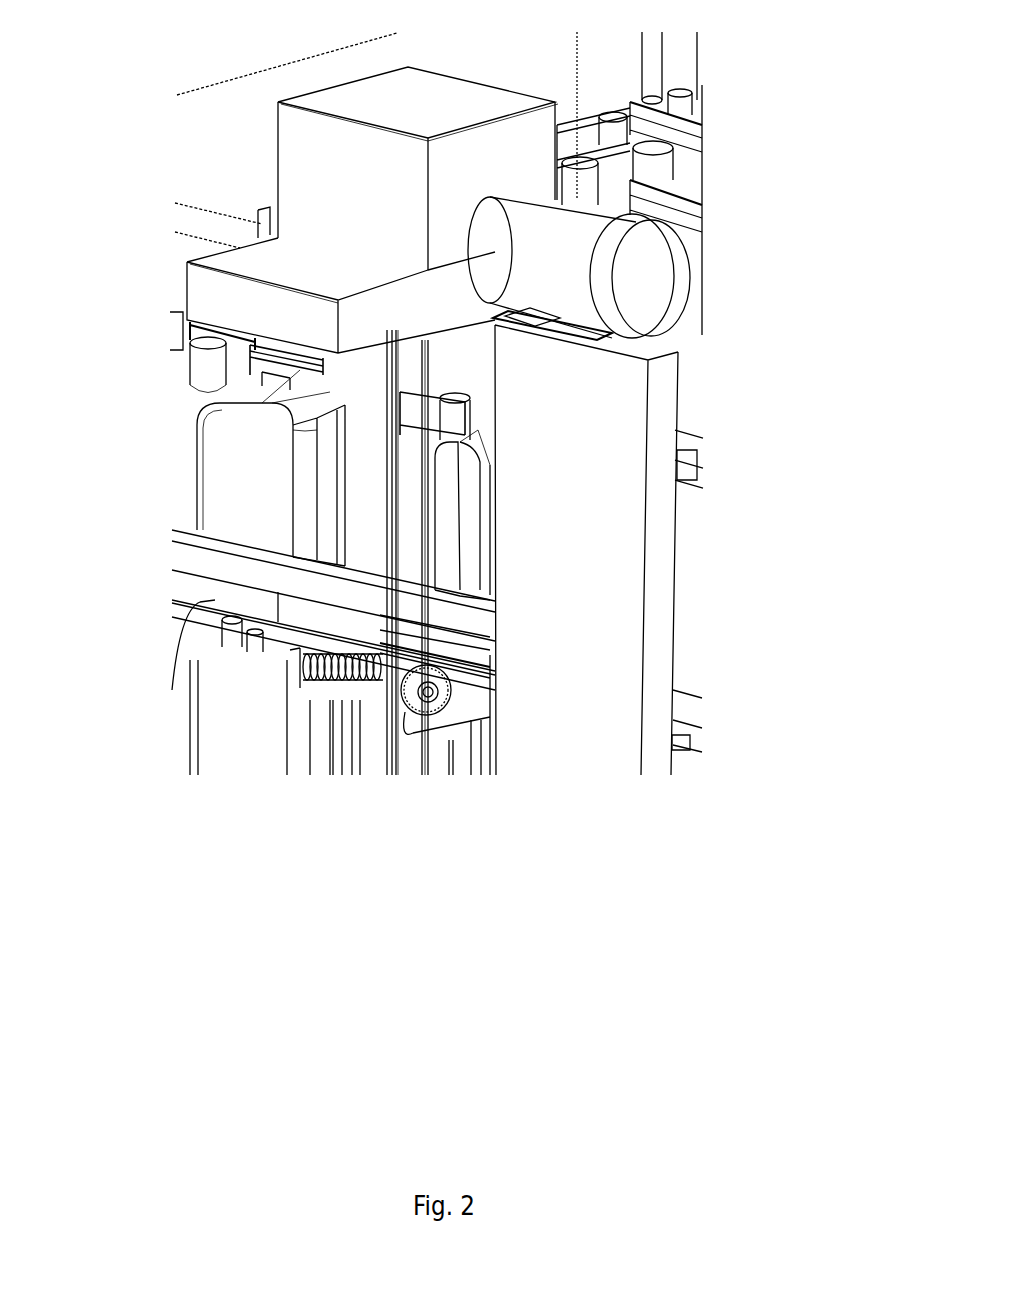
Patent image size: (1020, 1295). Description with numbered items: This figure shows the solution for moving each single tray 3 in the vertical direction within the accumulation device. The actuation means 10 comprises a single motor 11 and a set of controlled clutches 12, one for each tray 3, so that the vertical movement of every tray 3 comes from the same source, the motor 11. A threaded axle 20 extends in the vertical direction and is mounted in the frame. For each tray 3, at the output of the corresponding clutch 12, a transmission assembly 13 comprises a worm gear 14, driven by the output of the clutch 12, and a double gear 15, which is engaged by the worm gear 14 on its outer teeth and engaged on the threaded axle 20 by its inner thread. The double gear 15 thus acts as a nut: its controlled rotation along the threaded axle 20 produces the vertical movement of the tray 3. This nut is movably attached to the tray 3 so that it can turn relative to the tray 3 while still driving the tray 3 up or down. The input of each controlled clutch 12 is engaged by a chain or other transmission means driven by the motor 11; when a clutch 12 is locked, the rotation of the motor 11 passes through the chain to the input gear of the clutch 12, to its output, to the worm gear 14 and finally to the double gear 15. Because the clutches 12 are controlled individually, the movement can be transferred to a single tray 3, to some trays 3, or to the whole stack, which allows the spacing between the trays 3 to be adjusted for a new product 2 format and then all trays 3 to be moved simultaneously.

The product 2 is at (240, 473).
The tray 3 is at (267, 582).
The actuation means 10 is at (745, 582).
The motor 11 is at (672, 286).
The controlled clutch 12 is at (399, 696).
The transmission assembly 13 is at (337, 787).
The worm gear 14 is at (316, 650).
The double gear 15 is at (363, 651).
The threaded axle 20 is at (378, 450).